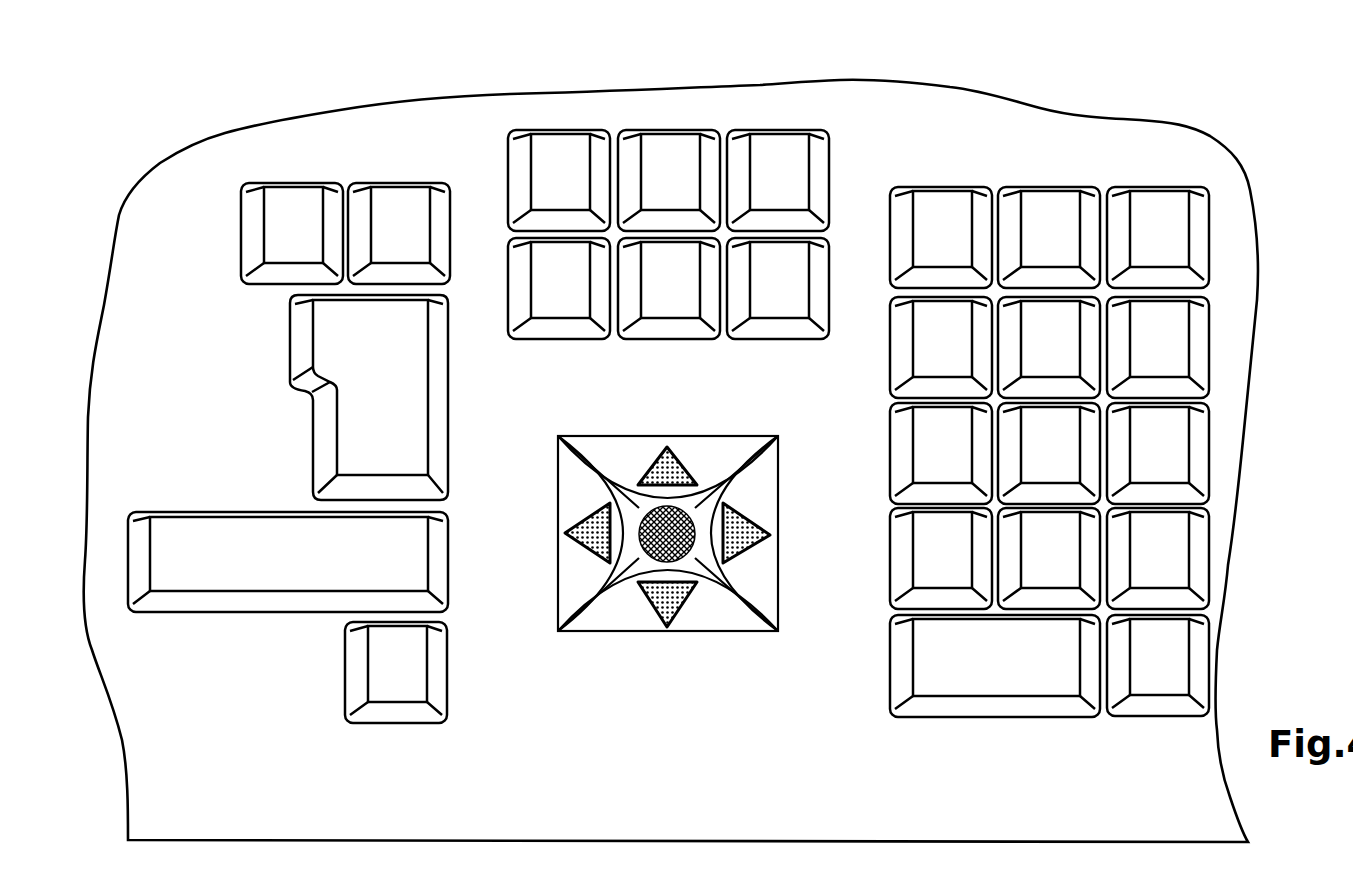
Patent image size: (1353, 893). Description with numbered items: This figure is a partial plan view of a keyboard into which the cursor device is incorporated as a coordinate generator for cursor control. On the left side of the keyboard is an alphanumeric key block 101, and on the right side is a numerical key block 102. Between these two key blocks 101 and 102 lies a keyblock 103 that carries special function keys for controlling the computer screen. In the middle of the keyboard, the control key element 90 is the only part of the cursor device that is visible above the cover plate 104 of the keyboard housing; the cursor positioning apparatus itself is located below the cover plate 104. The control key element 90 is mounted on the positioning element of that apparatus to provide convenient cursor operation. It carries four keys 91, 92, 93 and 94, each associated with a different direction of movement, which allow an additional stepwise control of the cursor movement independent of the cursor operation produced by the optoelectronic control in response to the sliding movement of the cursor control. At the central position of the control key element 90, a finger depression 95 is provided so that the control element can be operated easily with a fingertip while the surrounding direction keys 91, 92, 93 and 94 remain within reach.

The control key element 90 is at (663, 550).
The key 91 is at (663, 447).
The key 92 is at (663, 620).
The key 93 is at (570, 522).
The key 94 is at (760, 537).
The finger depression 95 is at (685, 552).
The alphanumeric key block 101 is at (293, 235).
The numerical key block 102 is at (1053, 233).
The keyblock 103 is at (680, 195).
The cover plate 104 is at (842, 780).